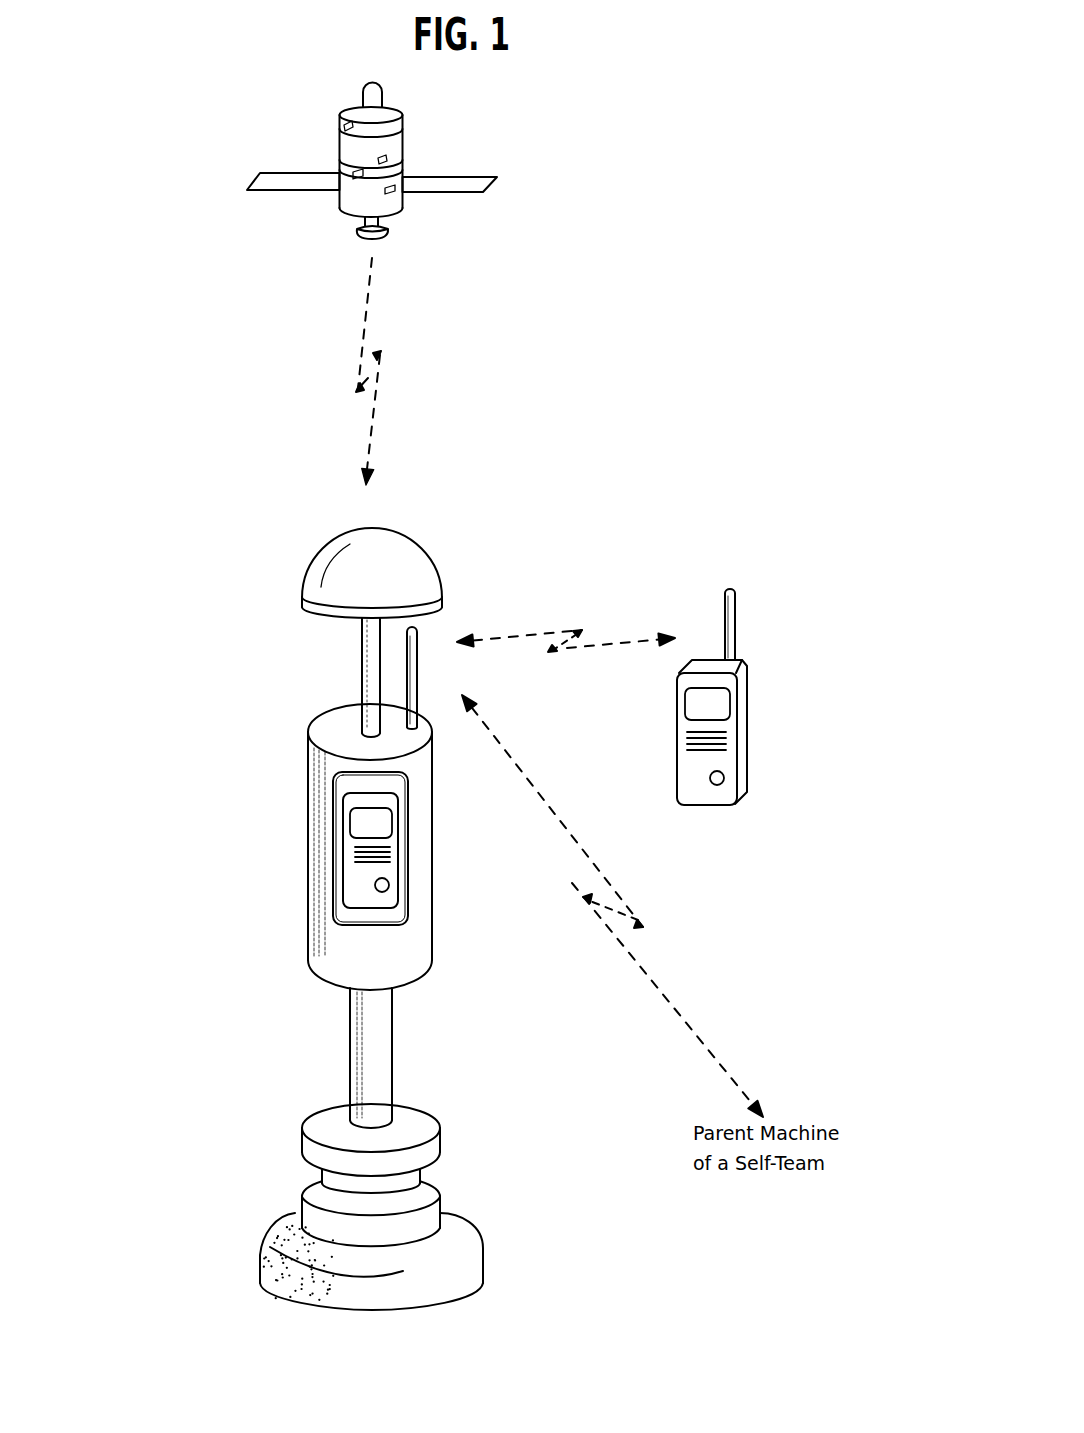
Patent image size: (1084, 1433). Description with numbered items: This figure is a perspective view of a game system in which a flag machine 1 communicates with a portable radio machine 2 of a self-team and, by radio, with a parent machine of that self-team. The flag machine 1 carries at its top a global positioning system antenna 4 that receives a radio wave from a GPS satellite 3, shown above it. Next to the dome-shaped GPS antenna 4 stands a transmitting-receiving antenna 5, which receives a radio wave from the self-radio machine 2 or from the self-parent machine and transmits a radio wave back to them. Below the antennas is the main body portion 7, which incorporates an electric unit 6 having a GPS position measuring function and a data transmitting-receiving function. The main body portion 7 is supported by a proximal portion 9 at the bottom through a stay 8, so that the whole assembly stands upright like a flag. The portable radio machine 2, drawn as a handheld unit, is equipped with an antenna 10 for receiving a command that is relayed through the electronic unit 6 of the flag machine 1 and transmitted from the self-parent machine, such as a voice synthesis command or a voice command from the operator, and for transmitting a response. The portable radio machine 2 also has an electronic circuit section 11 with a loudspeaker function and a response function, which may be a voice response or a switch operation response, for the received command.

The flag machine 1 is at (248, 767).
The portable radio machine 2 is at (704, 680).
The GPS satellite 3 is at (405, 142).
The global positioning system (GPS) antenna 4 is at (435, 560).
The transmitting-receiving antenna 5 is at (418, 637).
The electric unit 6 is at (390, 870).
The main body portion 7 is at (308, 903).
The stay 8 is at (392, 1047).
The proximal portion 9 is at (523, 1112).
The antenna 10 is at (727, 620).
The electronic circuit section 11 is at (677, 742).